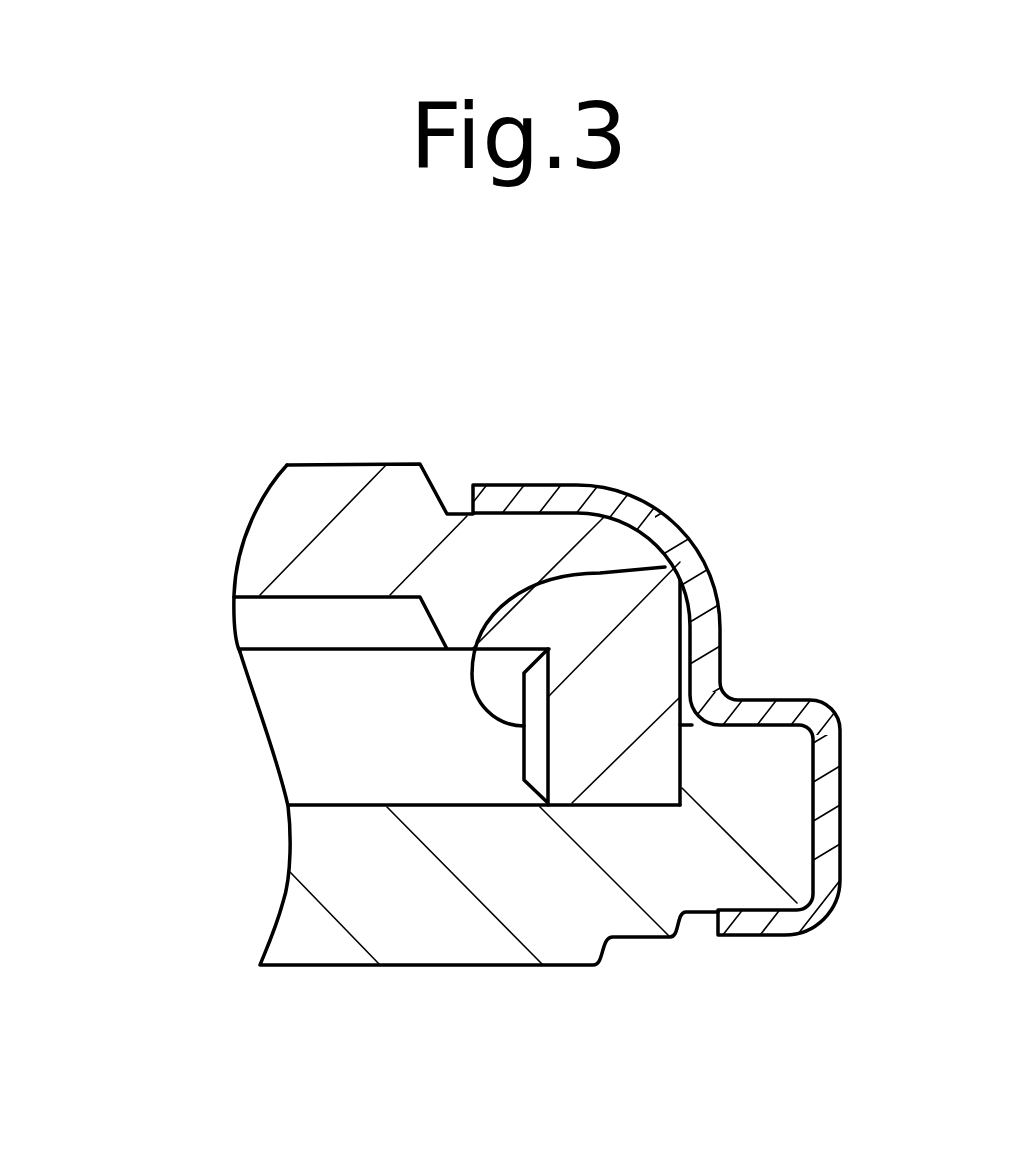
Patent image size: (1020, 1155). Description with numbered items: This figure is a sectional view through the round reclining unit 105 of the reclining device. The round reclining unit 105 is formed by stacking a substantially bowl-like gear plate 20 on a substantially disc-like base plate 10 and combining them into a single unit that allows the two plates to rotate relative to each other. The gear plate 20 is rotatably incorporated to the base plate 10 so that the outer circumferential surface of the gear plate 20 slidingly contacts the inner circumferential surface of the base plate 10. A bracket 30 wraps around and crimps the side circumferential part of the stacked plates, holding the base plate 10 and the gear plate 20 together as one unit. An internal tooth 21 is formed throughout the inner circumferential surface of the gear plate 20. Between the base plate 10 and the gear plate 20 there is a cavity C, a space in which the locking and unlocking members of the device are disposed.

The round reclining unit 105 is at (907, 292).
The gear plate 20 is at (333, 464).
The internal tooth 21 is at (663, 570).
The bracket 30 is at (710, 568).
The base plate 10 is at (382, 965).
The cavity C is at (303, 733).